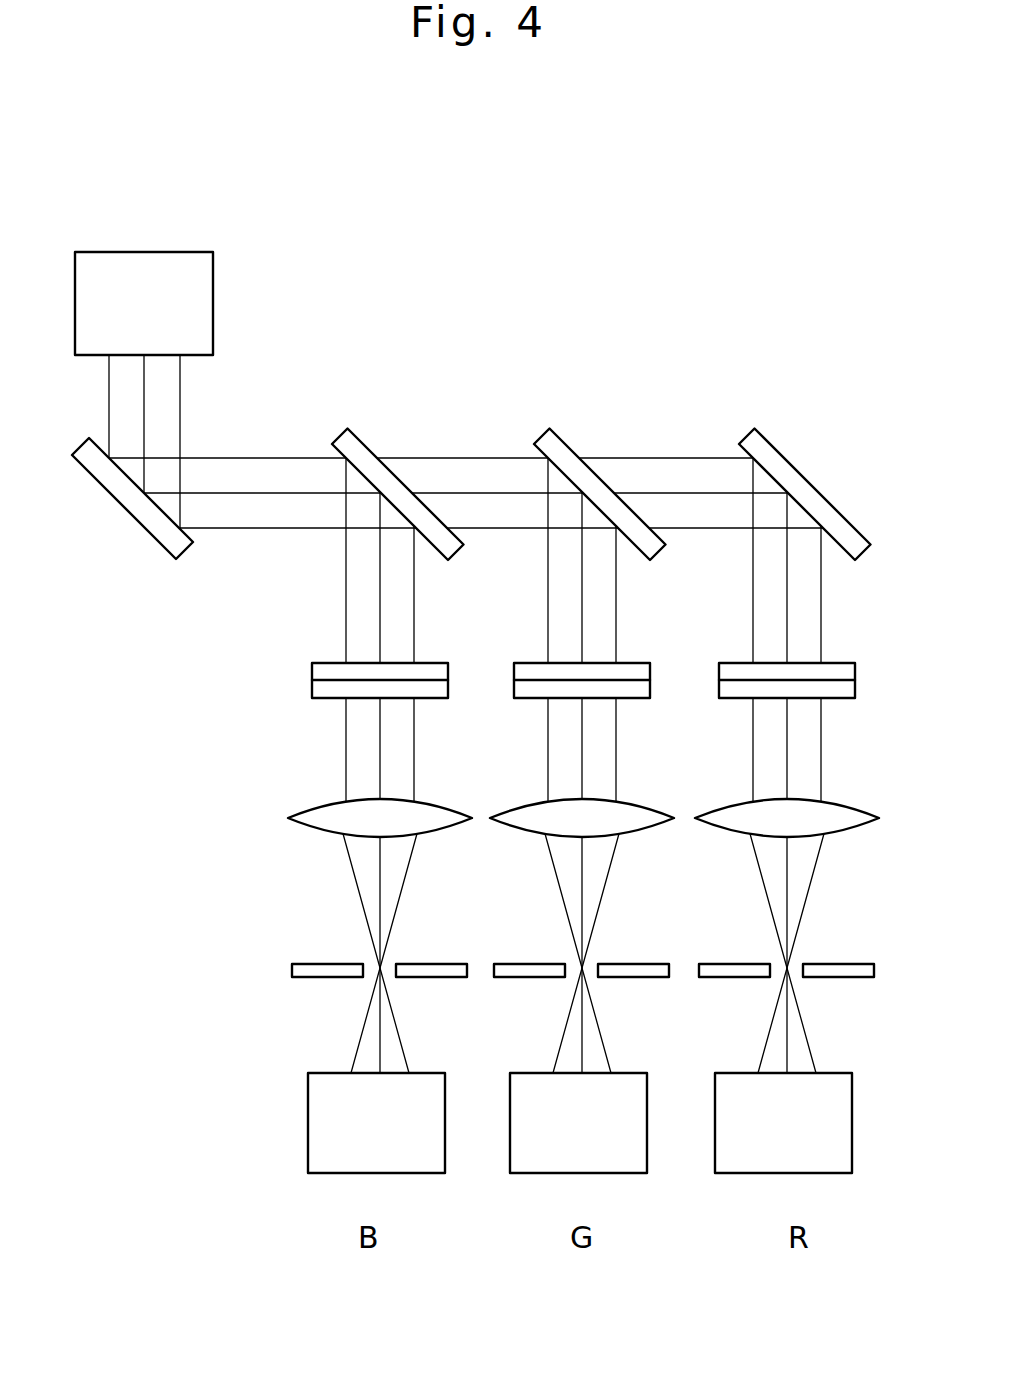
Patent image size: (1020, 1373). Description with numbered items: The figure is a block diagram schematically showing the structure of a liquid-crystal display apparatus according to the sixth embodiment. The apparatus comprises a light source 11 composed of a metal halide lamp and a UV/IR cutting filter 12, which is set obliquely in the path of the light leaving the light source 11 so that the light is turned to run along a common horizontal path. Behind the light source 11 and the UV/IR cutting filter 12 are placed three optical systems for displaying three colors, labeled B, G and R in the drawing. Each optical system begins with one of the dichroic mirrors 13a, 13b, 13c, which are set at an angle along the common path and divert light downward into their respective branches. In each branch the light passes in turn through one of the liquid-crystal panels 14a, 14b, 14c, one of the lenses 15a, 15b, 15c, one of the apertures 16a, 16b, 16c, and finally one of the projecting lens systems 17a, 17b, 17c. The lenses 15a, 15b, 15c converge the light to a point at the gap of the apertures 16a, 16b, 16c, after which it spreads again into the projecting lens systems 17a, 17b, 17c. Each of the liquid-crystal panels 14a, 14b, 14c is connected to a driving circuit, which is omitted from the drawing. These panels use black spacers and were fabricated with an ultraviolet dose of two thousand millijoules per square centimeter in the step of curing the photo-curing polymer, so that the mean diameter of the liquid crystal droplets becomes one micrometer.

The light source 11 is at (176, 276).
The UV/IR cutting filter 12 is at (125, 496).
The dichroic mirror 13a is at (358, 443).
The dichroic mirror 13b is at (560, 443).
The dichroic mirror 13c is at (765, 443).
The liquid-crystal panel 14a is at (438, 673).
The liquid-crystal panel 14b is at (640, 673).
The liquid-crystal panel 14c is at (845, 673).
The lens 15a is at (430, 813).
The lens 15b is at (632, 813).
The lens 15c is at (837, 813).
The aperture 16a is at (437, 970).
The aperture 16b is at (639, 970).
The aperture 16c is at (844, 970).
The projecting lens system 17a is at (438, 1110).
The projecting lens system 17b is at (640, 1110).
The projecting lens system 17c is at (845, 1110).